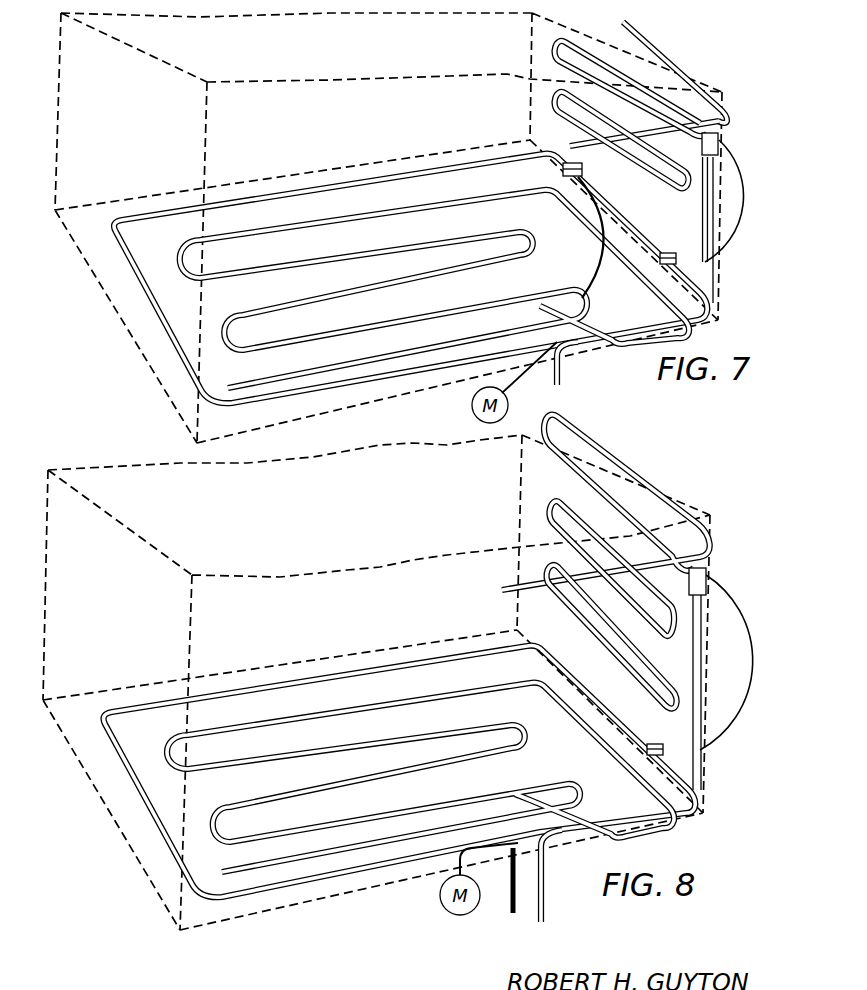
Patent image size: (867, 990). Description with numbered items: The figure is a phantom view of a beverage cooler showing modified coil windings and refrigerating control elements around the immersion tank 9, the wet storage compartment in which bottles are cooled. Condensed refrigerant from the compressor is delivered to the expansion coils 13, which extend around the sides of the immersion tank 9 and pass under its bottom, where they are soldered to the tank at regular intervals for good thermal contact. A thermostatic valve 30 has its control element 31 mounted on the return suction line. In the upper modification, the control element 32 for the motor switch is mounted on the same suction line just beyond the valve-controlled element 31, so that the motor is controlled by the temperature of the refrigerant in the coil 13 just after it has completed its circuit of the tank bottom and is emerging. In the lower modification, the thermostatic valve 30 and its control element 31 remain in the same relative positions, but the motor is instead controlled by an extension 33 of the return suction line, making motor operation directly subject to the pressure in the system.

In FIG. 7, the immersion tank 9 is at (123, 327).
In FIG. 8, the immersion tank 9 is at (113, 823).
In FIG. 7, the expansion coils 13 is at (331, 186).
In FIG. 7, the thermostatic valve 30 is at (719, 141).
In FIG. 8, the thermostatic valve 30 is at (700, 580).
In FIG. 7, the control element of the thermostatic valve 31 is at (677, 258).
In FIG. 8, the control element of the thermostatic valve 31 is at (663, 749).
In FIG. 7, the control element for the motor switch 32 is at (562, 169).
In FIG. 8, the extension of the return suction line 33 is at (502, 845).